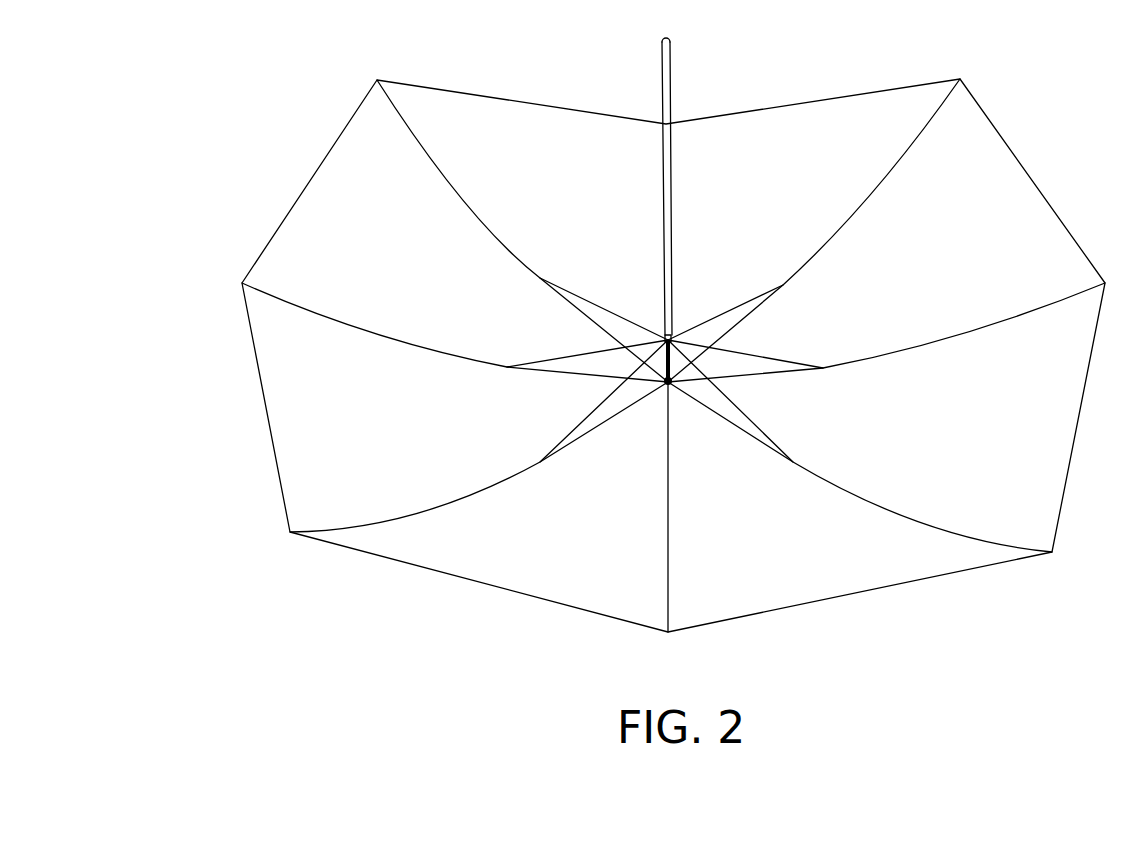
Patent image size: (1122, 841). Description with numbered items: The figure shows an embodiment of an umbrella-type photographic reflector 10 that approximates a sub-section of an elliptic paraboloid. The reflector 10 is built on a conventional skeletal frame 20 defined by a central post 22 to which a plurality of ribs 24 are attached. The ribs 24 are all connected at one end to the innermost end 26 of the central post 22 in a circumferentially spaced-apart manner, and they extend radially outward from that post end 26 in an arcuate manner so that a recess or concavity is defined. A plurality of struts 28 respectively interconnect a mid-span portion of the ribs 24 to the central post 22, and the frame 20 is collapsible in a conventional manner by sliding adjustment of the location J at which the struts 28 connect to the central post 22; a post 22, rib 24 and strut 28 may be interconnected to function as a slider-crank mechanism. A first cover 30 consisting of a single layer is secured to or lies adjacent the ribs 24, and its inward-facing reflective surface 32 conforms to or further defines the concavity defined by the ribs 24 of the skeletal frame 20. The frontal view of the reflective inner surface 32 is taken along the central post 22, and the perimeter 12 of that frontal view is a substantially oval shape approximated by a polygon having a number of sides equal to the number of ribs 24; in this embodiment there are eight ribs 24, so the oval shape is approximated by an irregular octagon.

The photographic reflector 10 is at (348, 583).
The perimeter 12 is at (241, 342).
The frame 20 is at (697, 259).
The central post 22 is at (680, 53).
The ribs 24 is at (853, 363).
The innermost end 26 is at (674, 392).
The struts 28 is at (582, 303).
The first cover 30 is at (354, 244).
The reflective surface 32 is at (952, 443).
The location at which the struts connect to the central post J is at (656, 326).